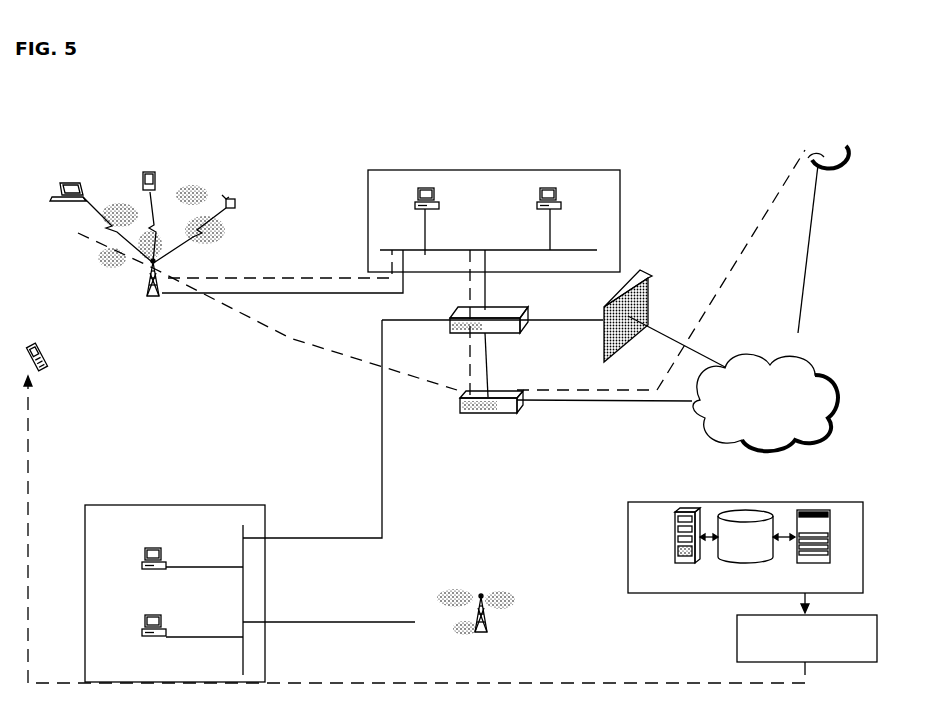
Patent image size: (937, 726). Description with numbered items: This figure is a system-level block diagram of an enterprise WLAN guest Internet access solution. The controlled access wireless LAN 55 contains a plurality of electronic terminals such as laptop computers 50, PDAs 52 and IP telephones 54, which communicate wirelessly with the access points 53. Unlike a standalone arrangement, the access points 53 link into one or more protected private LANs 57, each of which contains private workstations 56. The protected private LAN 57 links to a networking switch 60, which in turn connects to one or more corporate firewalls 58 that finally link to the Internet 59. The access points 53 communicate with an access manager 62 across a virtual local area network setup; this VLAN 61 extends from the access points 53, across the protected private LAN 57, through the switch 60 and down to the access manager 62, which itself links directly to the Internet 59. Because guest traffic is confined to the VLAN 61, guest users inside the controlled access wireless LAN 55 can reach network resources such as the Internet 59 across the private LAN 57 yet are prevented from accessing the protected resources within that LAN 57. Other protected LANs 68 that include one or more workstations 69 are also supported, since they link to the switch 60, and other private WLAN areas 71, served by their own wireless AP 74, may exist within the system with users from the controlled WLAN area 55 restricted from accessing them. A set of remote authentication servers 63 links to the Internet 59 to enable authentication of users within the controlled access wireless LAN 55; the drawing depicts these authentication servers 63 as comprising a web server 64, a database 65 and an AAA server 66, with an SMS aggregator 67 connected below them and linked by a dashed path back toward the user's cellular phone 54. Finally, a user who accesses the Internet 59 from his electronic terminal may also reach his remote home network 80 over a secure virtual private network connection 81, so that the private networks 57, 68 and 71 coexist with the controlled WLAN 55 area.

The laptop computer 50 is at (93, 211).
The PDA 52 is at (155, 209).
The access point 53 is at (151, 287).
The IP telephone 54 is at (173, 302).
The controlled access wireless LAN 55 is at (154, 195).
The private workstation 56 is at (487, 221).
The protected private LAN 57 is at (494, 196).
The corporate firewall 58 is at (651, 326).
The Internet 59 is at (785, 387).
The networking switch 60 is at (423, 394).
The VLAN 61 is at (282, 272).
The access manager 62 is at (626, 306).
The remote authentication servers 63 is at (754, 540).
The web server 64 is at (688, 547).
The database 65 is at (741, 529).
The AAA server 66 is at (814, 546).
The SMS aggregator 67 is at (450, 529).
The other protected LAN 68 is at (175, 567).
The workstation 69 is at (173, 635).
The private WLAN area 71 is at (445, 585).
The wireless access point 74 is at (386, 625).
The remote home network 80 is at (792, 225).
The VPN connection 81 is at (267, 311).